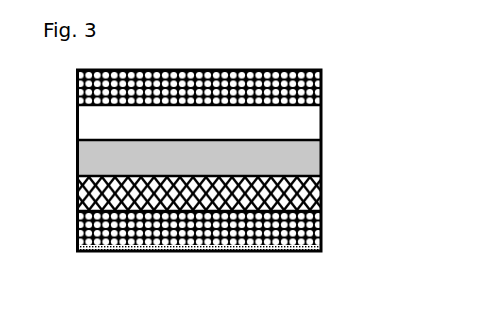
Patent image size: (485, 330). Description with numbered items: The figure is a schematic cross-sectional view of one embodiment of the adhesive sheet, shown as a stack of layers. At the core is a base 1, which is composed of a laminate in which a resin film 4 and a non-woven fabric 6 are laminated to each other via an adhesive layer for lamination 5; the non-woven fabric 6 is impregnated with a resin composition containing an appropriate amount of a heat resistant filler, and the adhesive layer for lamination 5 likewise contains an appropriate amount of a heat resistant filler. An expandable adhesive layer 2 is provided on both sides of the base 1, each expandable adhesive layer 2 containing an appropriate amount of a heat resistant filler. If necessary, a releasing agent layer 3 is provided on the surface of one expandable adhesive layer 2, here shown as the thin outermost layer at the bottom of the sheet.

The base 1 is at (403, 102).
The expandable adhesive layer 2 is at (315, 92).
The releasing agent layer 3 is at (300, 254).
The resin film 4 is at (312, 127).
The adhesive layer for lamination 5 is at (313, 150).
The non-woven fabric 6 is at (313, 190).